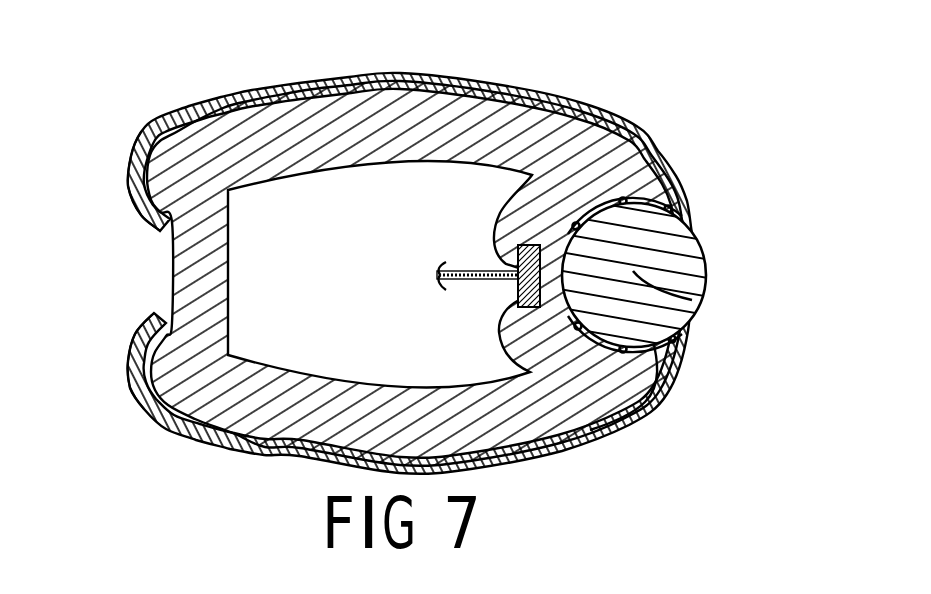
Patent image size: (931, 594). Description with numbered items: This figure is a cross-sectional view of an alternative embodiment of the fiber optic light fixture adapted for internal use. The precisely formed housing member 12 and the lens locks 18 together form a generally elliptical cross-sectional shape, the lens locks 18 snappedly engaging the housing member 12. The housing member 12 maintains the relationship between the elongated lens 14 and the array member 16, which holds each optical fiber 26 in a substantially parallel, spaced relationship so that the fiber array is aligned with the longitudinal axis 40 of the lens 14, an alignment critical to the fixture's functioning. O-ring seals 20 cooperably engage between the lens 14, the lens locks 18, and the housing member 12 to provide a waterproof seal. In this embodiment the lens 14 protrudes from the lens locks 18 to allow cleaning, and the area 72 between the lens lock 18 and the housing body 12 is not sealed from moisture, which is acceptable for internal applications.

The housing member 12 is at (172, 270).
The lens 14 is at (703, 243).
The array member 16 is at (508, 292).
The lens locks 18 is at (367, 78).
The O-ring seals 20 is at (576, 222).
The optical fiber 26 is at (468, 272).
The longitudinal axis of the lens 40 is at (707, 302).
The area between the lens lock and the housing body 72 is at (137, 147).